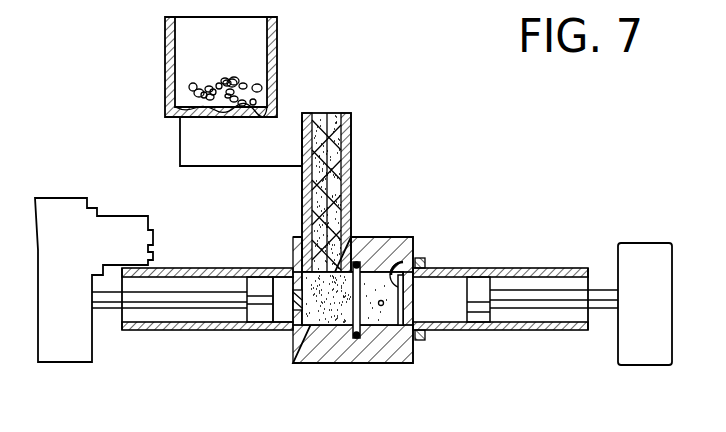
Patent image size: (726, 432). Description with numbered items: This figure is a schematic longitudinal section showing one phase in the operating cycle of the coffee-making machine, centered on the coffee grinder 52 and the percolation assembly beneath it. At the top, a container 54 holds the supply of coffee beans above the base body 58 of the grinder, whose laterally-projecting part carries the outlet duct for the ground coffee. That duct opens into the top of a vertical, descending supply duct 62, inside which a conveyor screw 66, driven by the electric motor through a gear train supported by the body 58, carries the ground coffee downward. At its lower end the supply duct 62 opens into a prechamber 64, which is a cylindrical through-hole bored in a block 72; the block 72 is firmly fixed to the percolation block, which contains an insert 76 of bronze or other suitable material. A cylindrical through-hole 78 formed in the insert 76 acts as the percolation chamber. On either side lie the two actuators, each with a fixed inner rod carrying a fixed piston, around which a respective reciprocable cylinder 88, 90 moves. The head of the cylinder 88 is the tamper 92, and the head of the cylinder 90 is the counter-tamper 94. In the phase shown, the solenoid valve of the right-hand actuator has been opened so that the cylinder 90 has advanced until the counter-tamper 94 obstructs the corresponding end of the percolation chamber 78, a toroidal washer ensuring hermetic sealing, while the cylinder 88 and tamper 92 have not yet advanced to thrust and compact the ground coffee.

The coffee grinder 52 is at (160, 140).
The container 54 is at (277, 48).
The base body 58 is at (213, 145).
The supply duct 62 is at (351, 180).
The conveyor screw 66 is at (351, 137).
The prechamber 64 is at (318, 363).
The block 72 is at (305, 365).
The insert 76 is at (412, 363).
The percolation chamber 78 is at (375, 363).
The cylinder 88 is at (150, 330).
The cylinder 90 is at (528, 330).
The tamper 92 is at (290, 330).
The counter-tamper 94 is at (413, 243).